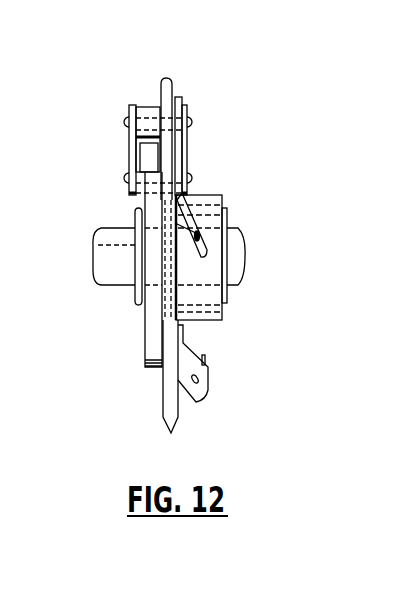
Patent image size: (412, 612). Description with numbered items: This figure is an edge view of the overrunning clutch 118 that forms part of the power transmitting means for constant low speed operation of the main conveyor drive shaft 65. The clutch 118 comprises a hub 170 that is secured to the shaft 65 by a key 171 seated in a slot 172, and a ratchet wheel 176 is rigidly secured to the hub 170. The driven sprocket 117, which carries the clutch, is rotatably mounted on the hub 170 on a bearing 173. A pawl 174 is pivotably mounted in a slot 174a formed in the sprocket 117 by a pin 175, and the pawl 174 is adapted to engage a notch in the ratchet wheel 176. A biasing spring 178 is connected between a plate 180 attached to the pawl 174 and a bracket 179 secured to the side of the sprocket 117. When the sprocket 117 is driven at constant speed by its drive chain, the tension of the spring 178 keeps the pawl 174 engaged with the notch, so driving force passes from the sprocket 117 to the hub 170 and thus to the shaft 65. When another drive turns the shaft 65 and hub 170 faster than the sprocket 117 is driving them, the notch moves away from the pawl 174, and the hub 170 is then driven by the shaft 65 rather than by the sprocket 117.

The main conveyor drive shaft 65 is at (238, 243).
The driven sprocket 117 is at (172, 84).
The overrunning clutch 118 is at (100, 145).
The hub 170 is at (218, 291).
The key 171 is at (135, 222).
The slot 172 is at (90, 245).
The bearing 173 is at (228, 307).
The pawl 174 is at (128, 177).
The slot 174a is at (187, 148).
The pin 175 is at (127, 123).
The ratchet wheel 176 is at (147, 357).
The biasing spring 178 is at (207, 365).
The bracket 179 is at (207, 397).
The plate 180 is at (217, 232).